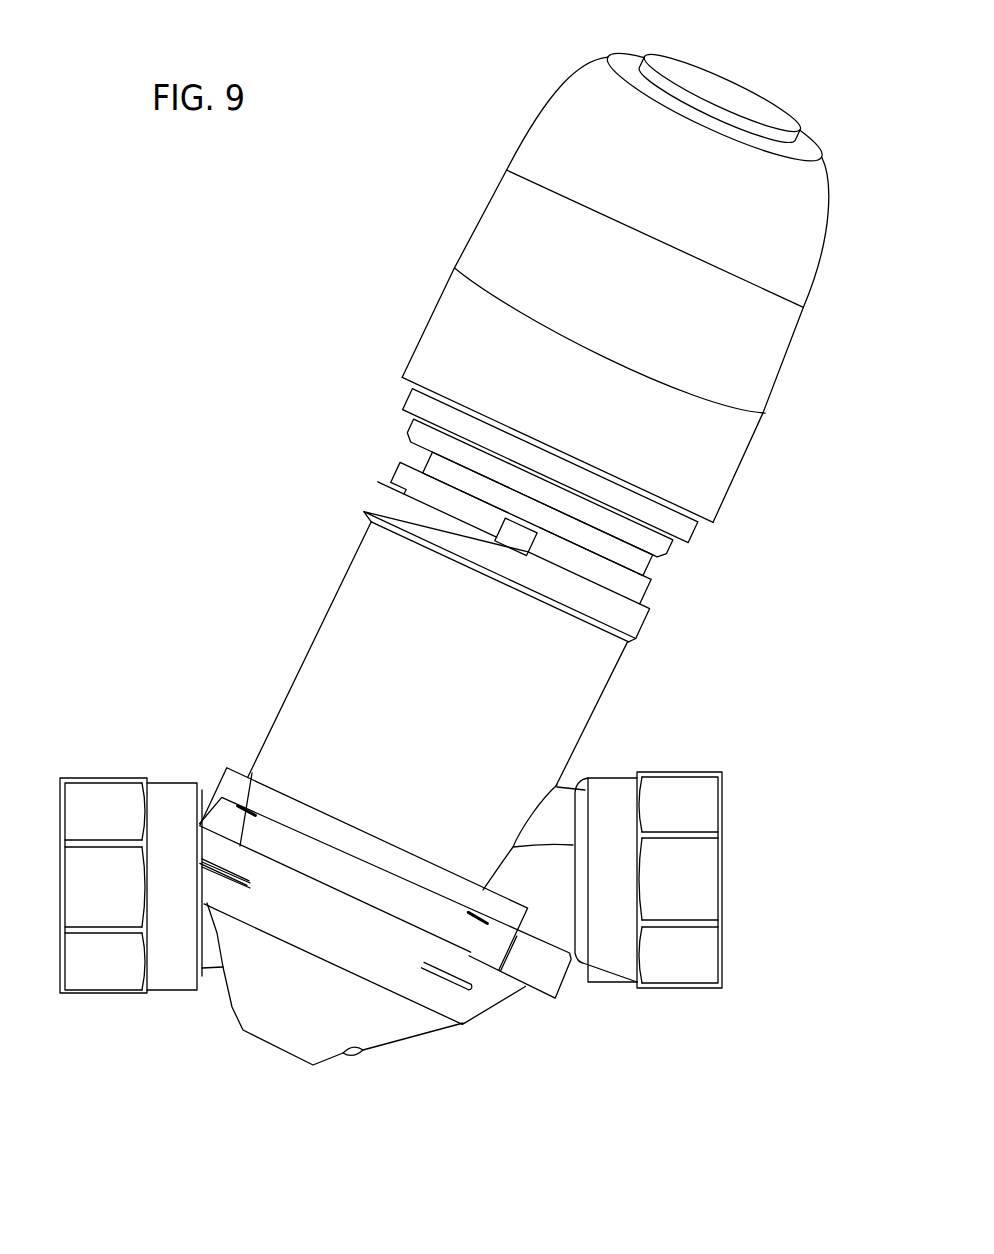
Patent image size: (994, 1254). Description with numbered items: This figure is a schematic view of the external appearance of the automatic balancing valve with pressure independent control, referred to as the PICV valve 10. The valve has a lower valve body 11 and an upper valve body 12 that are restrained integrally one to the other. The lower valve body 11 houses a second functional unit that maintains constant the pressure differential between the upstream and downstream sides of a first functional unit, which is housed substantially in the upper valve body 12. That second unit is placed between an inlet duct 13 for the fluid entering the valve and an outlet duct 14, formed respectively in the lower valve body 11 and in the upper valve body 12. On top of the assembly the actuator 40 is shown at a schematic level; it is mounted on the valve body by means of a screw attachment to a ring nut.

The PICV valve 10 is at (198, 348).
The lower valve body 11 is at (427, 1047).
The upper valve body 12 is at (293, 662).
The inlet duct 13 is at (103, 890).
The outlet duct 14 is at (670, 880).
The actuator 40 is at (610, 177).